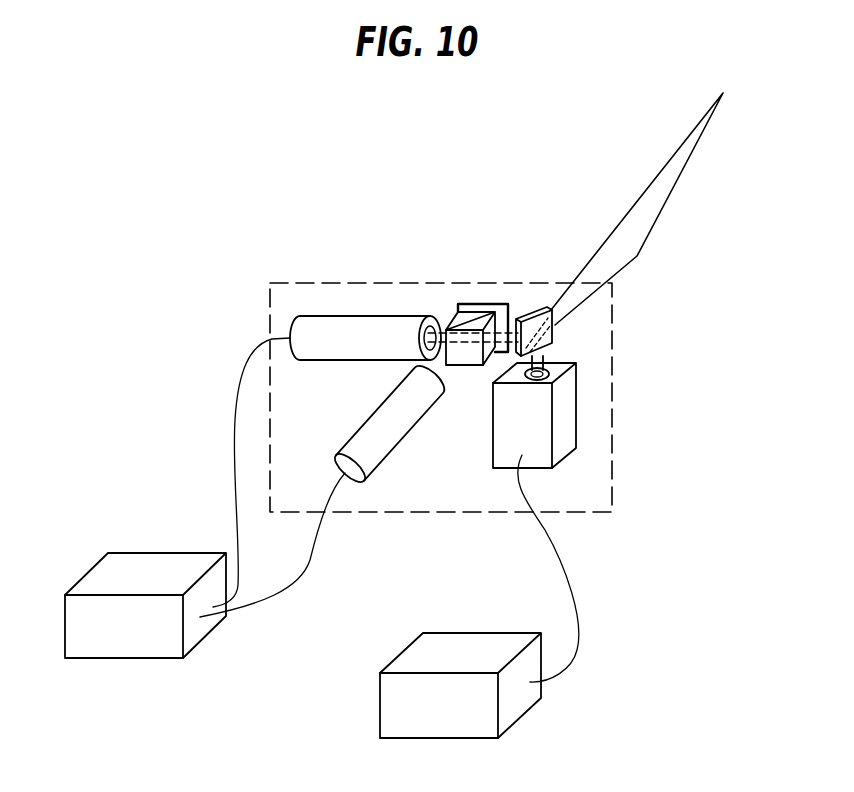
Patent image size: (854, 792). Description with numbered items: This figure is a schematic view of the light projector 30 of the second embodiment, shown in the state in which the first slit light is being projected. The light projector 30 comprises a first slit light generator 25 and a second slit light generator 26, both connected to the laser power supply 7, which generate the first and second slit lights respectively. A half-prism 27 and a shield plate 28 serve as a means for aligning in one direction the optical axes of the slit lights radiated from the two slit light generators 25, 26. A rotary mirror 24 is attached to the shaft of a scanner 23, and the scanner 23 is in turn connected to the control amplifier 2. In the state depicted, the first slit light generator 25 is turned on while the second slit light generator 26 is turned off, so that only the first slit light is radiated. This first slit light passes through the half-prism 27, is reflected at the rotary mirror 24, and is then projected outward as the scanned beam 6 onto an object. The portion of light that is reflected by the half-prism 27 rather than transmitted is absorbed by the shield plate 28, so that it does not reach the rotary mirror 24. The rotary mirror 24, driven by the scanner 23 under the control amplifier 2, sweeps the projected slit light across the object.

The control amplifier 2 is at (405, 710).
The scanning light beam 6 is at (683, 169).
The laser power supply 7 is at (145, 568).
The scanner 23 is at (575, 420).
The rotary mirror 24 is at (553, 326).
The first slit light generator 25 is at (318, 316).
The second slit light generator 26 is at (383, 453).
The half-prism 27 is at (455, 318).
The shield plate 28 is at (488, 304).
The light projector 30 is at (592, 512).